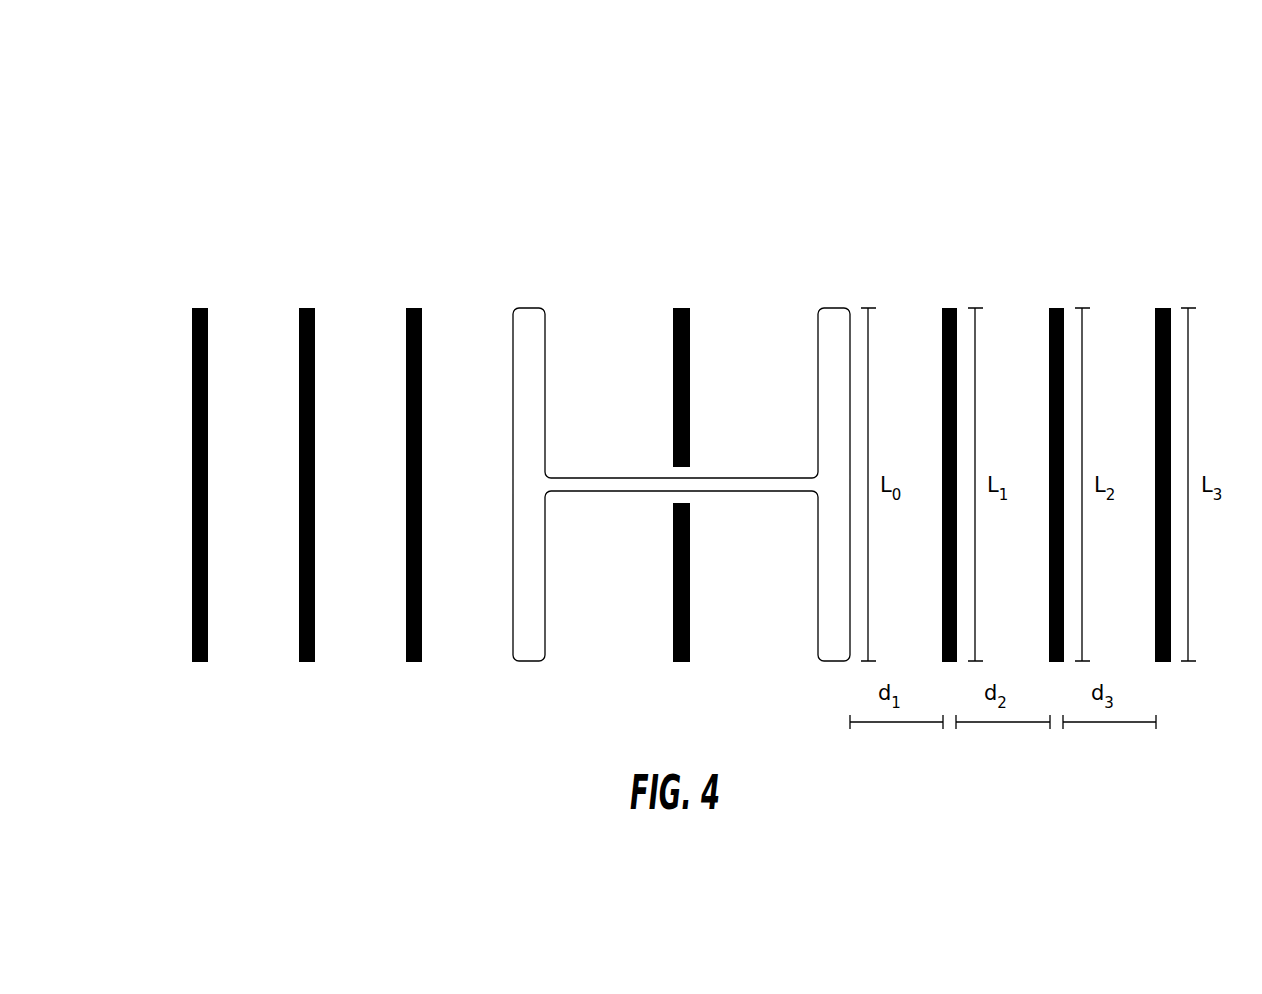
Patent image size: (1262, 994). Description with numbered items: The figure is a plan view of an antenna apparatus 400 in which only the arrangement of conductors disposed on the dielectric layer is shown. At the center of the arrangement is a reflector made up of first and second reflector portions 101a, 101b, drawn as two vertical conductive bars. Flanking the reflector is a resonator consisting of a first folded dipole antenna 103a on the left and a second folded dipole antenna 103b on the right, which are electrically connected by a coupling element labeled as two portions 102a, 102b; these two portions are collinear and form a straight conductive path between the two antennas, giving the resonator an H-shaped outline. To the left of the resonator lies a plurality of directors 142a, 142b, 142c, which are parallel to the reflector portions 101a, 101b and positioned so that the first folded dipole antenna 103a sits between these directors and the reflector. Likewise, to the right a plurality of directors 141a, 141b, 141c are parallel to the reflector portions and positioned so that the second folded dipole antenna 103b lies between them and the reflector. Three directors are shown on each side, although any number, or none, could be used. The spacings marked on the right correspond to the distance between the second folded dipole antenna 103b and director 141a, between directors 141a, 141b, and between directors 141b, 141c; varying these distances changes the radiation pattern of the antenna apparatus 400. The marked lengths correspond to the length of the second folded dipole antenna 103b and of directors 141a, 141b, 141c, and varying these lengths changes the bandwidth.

The antenna apparatus 400 is at (1143, 107).
The first reflector portion 101a is at (690, 358).
The second reflector portion 101b is at (690, 552).
The first coupling element portion 102a is at (632, 478).
The second coupling element portion 102b is at (724, 478).
The first folded dipole antenna 103a is at (543, 557).
The second folded dipole antenna 103b is at (849, 627).
The director 141a is at (949, 307).
The director 141b is at (1056, 307).
The director 141c is at (1162, 307).
The director 142a is at (413, 307).
The director 142b is at (306, 307).
The director 142c is at (199, 307).